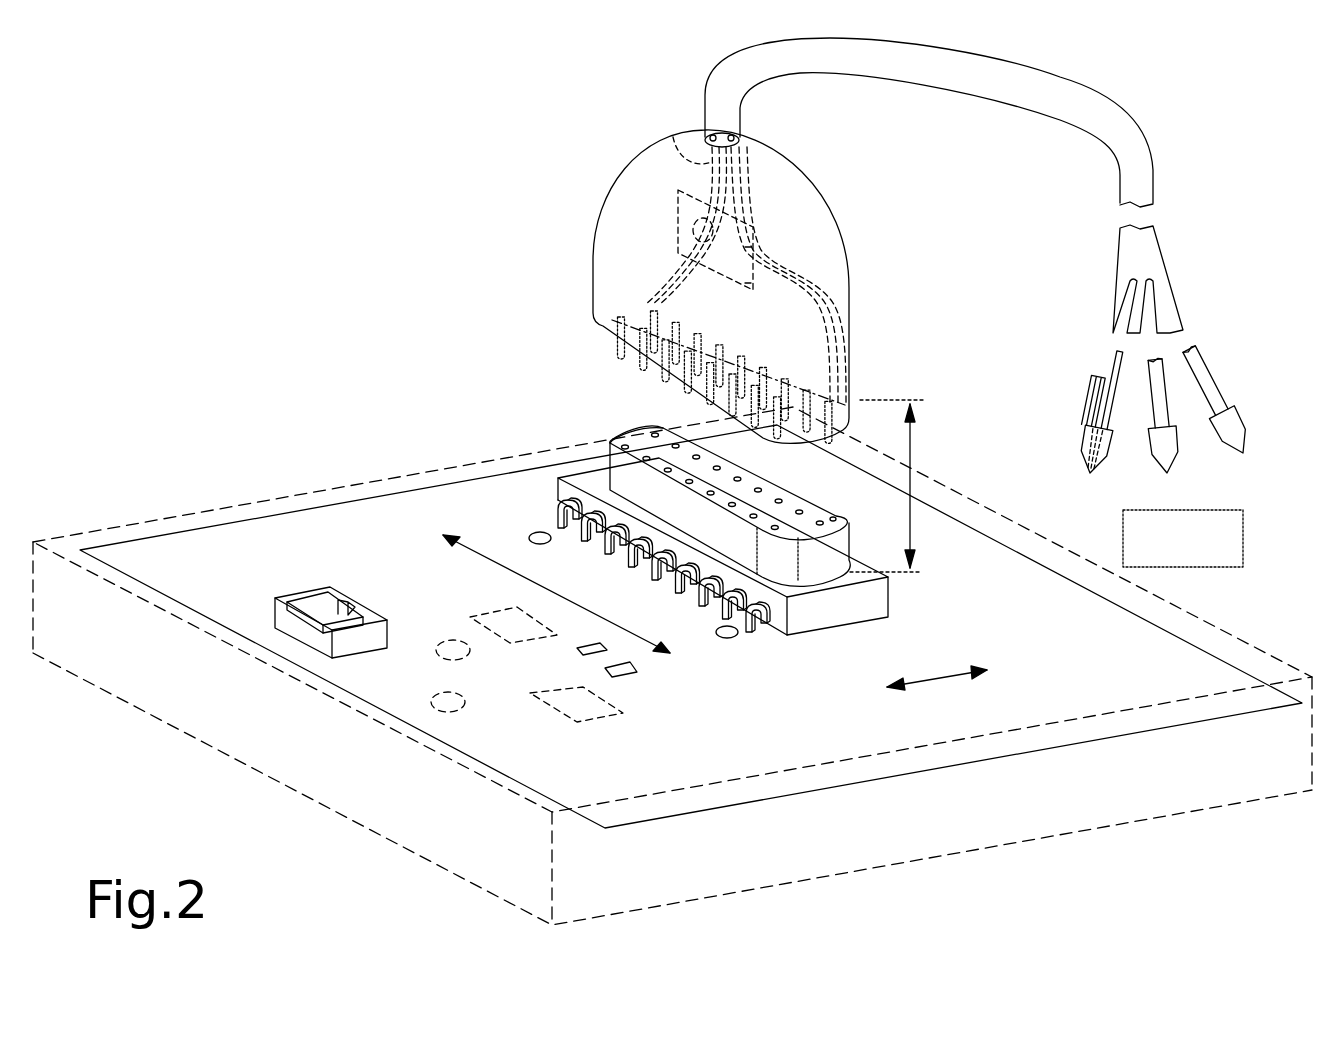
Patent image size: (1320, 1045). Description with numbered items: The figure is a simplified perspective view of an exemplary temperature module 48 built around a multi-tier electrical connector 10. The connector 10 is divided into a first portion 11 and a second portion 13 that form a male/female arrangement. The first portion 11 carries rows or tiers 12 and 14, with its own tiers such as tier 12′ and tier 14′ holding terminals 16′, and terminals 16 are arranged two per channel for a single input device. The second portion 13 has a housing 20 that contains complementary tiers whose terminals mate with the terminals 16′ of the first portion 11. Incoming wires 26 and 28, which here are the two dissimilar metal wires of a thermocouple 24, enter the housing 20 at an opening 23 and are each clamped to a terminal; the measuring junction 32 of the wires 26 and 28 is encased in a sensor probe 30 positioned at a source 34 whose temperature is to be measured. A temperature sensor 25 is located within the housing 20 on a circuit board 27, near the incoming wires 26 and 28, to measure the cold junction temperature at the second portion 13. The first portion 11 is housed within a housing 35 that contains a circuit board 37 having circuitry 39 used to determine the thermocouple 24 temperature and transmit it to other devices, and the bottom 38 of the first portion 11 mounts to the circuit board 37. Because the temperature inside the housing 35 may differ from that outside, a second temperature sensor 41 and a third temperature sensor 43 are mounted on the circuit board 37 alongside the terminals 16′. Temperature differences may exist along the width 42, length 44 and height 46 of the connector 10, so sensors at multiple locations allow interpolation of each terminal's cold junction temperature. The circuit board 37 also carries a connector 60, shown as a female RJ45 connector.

The electrical connector 10 is at (445, 138).
The first portion 11 is at (726, 481).
The tier 12 is at (767, 475).
The tier 12′ is at (699, 458).
The second portion 13 is at (690, 137).
The tier 14 is at (828, 518).
The tier 14′ is at (656, 430).
The terminal 16 is at (742, 502).
The terminal 16′ is at (576, 500).
The housing 20 is at (698, 264).
The opening 23 is at (720, 125).
The thermocouple 24 is at (1117, 425).
The temperature sensor 25 is at (682, 203).
The wire 26 is at (686, 141).
The circuit board 27 is at (763, 237).
The wire 28 is at (750, 188).
The sensor probe 30 is at (1177, 425).
The measuring junction 32 is at (1088, 462).
The source 34 is at (1200, 568).
The housing 35 is at (822, 873).
The circuit board 37 is at (730, 805).
The mounting plate 38 is at (833, 628).
The circuitry 39 is at (600, 718).
The second temperature sensor 41 is at (716, 631).
The width 42 is at (935, 685).
The third temperature sensor 43 is at (541, 544).
The length 44 is at (530, 578).
The height 46 is at (912, 445).
The temperature module 48 is at (672, 666).
The connector 60 is at (275, 598).